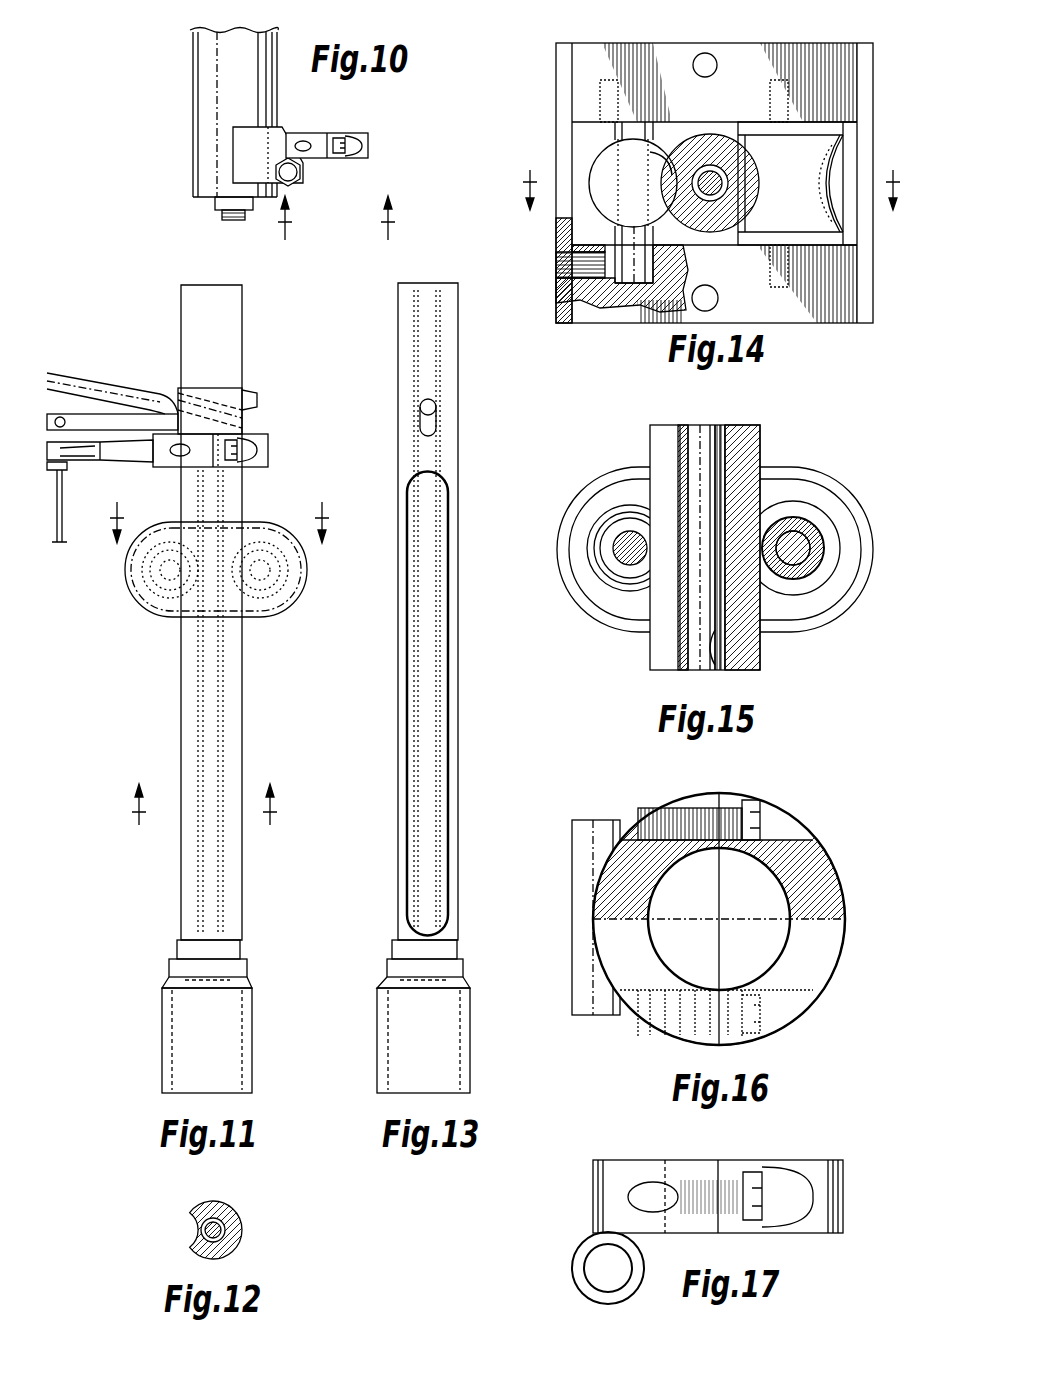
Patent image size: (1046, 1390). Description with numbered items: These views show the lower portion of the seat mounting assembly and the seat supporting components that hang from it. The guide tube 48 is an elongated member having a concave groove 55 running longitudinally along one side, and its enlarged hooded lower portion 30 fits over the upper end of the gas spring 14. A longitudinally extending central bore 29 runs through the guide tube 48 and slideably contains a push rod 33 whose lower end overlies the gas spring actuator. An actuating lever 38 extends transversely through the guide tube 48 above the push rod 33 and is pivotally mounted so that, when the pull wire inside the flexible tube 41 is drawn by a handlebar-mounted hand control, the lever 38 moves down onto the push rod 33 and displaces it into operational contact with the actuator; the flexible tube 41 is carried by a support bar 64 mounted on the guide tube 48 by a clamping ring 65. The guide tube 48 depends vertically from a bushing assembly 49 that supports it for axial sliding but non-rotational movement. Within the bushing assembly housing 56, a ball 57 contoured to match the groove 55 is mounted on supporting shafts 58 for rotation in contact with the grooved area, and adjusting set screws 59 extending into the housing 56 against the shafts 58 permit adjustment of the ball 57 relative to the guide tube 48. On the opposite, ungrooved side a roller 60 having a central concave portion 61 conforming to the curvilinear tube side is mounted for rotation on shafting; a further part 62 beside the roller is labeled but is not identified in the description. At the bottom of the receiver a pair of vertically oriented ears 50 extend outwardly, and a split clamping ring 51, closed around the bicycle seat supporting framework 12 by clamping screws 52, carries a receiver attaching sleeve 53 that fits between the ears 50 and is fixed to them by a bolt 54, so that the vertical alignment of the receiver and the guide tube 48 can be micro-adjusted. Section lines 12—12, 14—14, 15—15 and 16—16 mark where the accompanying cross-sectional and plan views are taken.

In FIG. 11, the bicycle seat supporting framework 12 is at (204, 818).
In FIG. 11, the gas spring 14 is at (219, 511).
In FIG. 14, the section line 15— 15 is at (712, 178).
In FIG. 10, the section line 16— 16 is at (336, 229).
In FIG. 15, the central bore 29 is at (715, 645).
In FIG. 11, the hooded lower portion 30 is at (185, 1055).
In FIG. 13, the hooded lower portion 30 is at (400, 1040).
In FIG. 14, the push rod 33 is at (713, 195).
In FIG. 15, the push rod 33 is at (700, 435).
In FIG. 11, the actuating lever 38 is at (95, 412).
In FIG. 13, the actuating lever 38 is at (437, 405).
In FIG. 11, the flexible tube 41 is at (65, 530).
In FIG. 14, the guide tube 48 is at (710, 183).
In FIG. 11, the guide tube 48 is at (234, 737).
In FIG. 13, the guide tube 48 is at (447, 450).
In FIG. 12, the guide tube 48 is at (218, 1208).
In FIG. 15, the guide tube 48 is at (745, 447).
In FIG. 11, the bushing assembly 49 is at (260, 617).
In FIG. 10, the ears 50 is at (255, 135).
In FIG. 11, the ears 50 is at (217, 411).
In FIG. 16, the ears 50 is at (810, 975).
In FIG. 10, the split clamping ring 51 is at (370, 146).
In FIG. 17, the split clamping ring 51 is at (830, 1160).
In FIG. 10, the clamping screws 52 is at (337, 138).
In FIG. 11, the clamping screws 52 is at (231, 450).
In FIG. 16, the clamping screws 52 is at (700, 795).
In FIG. 17, the clamping screws 52 is at (752, 1178).
In FIG. 16, the receiver attaching sleeve 53 is at (612, 1015).
In FIG. 17, the receiver attaching sleeve 53 is at (578, 1255).
In FIG. 10, the bolt 54 is at (300, 172).
In FIG. 14, the concave groove 55 is at (660, 158).
In FIG. 13, the concave groove 55 is at (445, 630).
In FIG. 12, the concave groove 55 is at (192, 1230).
In FIG. 15, the concave groove 55 is at (660, 448).
In FIG. 14, the bushing assembly housing 56 is at (735, 58).
In FIG. 15, the bushing assembly housing 56 is at (560, 552).
In FIG. 14, the ball 57 is at (633, 183).
In FIG. 15, the ball 57 is at (620, 508).
In FIG. 14, the supporting shafts 58 is at (620, 132).
In FIG. 15, the supporting shafts 58 is at (620, 565).
In FIG. 14, the adjusting set screws 59 is at (580, 308).
In FIG. 14, the roller 60 is at (830, 165).
In FIG. 15, the roller 60 is at (818, 540).
In FIG. 14, the central concave portion 61 is at (820, 228).
In FIG. 12, the central concave portion 61 is at (240, 1235).
In FIG. 15, the bearing 62 is at (795, 520).
In FIG. 11, the support bar 64 is at (105, 462).
In FIG. 11, the clamping ring 65 is at (165, 467).